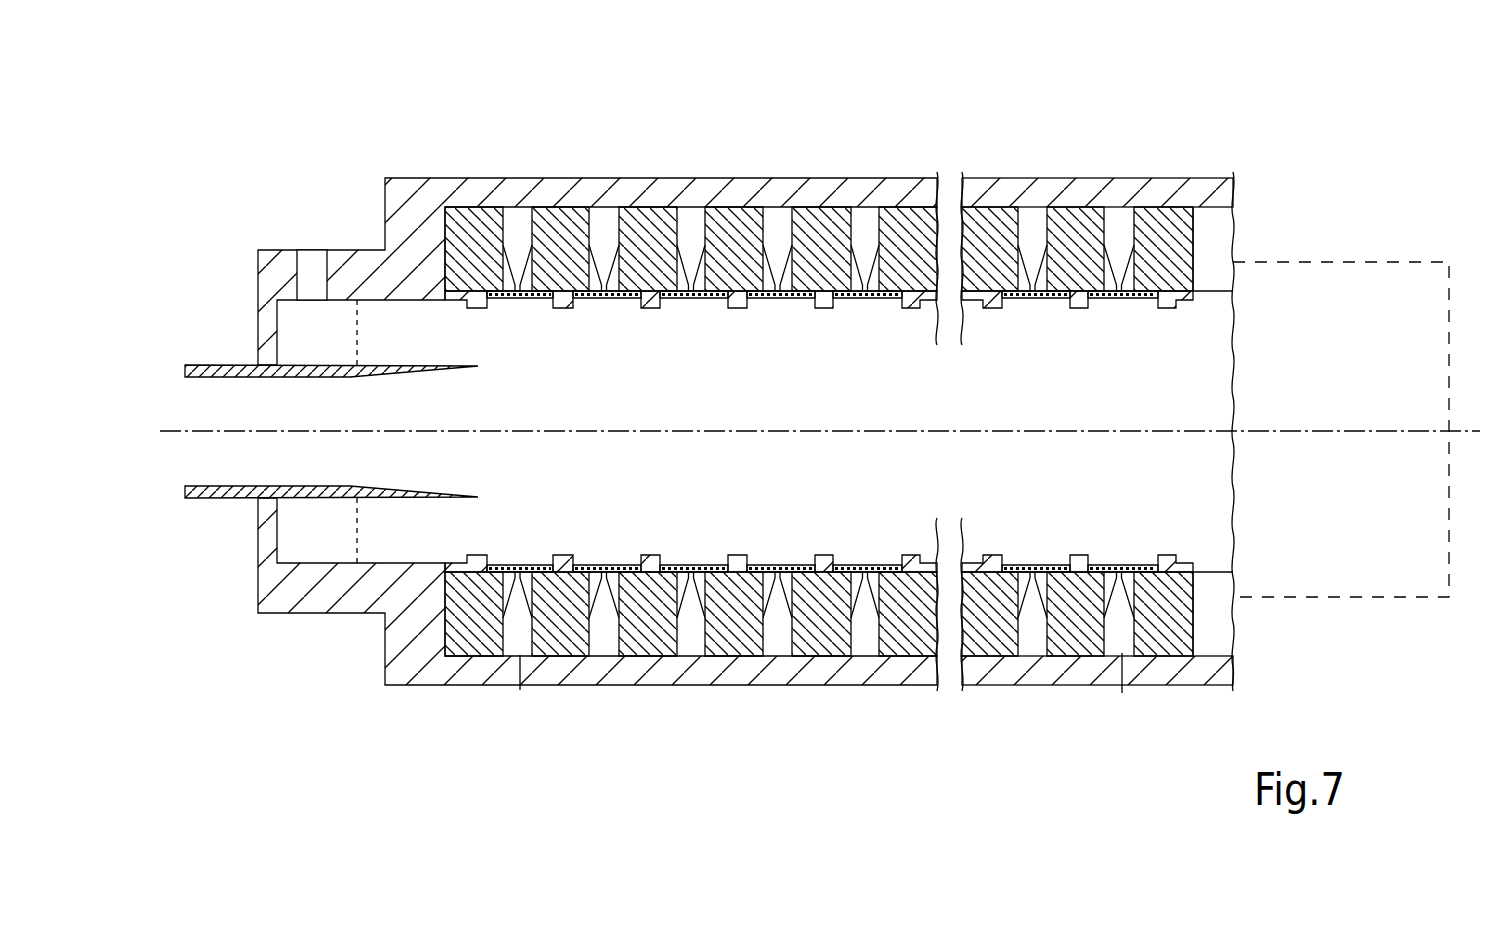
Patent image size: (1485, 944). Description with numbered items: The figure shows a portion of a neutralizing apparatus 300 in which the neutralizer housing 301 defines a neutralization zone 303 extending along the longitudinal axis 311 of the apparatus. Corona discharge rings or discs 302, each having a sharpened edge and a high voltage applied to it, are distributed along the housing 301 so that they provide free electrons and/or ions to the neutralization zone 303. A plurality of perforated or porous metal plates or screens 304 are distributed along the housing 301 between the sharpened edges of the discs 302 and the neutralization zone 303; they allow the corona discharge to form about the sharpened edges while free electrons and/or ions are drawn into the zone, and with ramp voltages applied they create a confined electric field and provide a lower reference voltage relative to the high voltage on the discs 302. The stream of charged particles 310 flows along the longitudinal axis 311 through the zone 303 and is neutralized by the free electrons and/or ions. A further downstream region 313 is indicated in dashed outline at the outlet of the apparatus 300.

The neutralizing apparatus 300 is at (754, 391).
The neutralizer housing 301 is at (707, 178).
The corona discharge rings or discs 302 is at (698, 242).
The neutralization zone 303 is at (705, 418).
The perforated or porous metal plates or screens 304 is at (586, 302).
The stream of charged particles 310 is at (182, 476).
The longitudinal axis 311 is at (1333, 426).
The downstream component 313 is at (1373, 600).